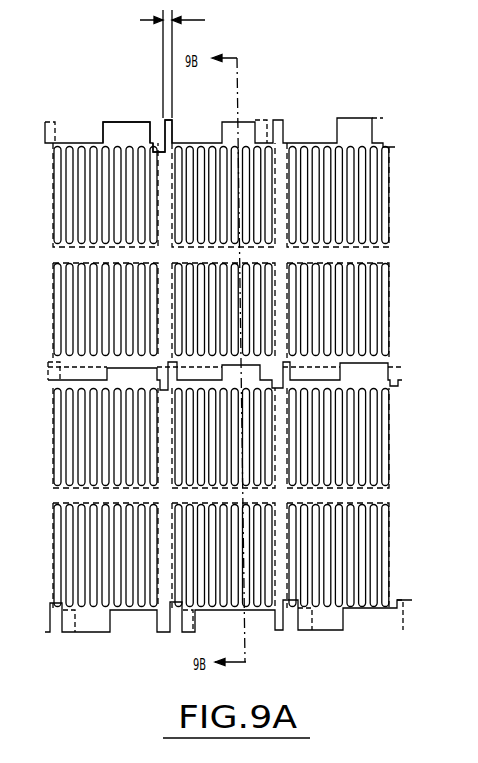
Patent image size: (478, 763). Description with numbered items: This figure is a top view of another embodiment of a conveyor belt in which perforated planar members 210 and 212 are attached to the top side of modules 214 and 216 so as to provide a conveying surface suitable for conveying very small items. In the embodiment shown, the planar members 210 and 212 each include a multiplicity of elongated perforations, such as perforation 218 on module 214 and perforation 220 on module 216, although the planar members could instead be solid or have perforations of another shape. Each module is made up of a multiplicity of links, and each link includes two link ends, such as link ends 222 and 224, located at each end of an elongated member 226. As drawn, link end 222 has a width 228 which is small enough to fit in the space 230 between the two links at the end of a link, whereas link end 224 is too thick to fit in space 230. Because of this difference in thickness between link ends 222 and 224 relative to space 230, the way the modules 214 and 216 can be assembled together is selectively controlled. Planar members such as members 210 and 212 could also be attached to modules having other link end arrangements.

The perforated planar member 210 is at (348, 128).
The perforated planar member 212 is at (327, 622).
The module 214 is at (390, 203).
The module 216 is at (392, 442).
The perforation 218 is at (387, 283).
The perforation 220 is at (392, 517).
The link end 222 is at (172, 125).
The link end 224 is at (150, 123).
The elongated member 226 is at (165, 178).
The width 228 is at (184, 64).
The space 230 is at (160, 120).